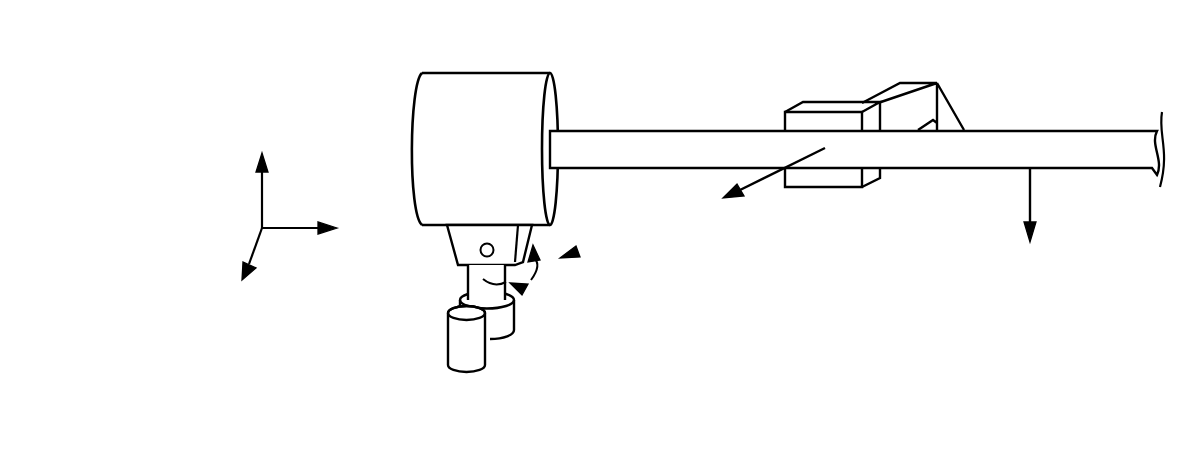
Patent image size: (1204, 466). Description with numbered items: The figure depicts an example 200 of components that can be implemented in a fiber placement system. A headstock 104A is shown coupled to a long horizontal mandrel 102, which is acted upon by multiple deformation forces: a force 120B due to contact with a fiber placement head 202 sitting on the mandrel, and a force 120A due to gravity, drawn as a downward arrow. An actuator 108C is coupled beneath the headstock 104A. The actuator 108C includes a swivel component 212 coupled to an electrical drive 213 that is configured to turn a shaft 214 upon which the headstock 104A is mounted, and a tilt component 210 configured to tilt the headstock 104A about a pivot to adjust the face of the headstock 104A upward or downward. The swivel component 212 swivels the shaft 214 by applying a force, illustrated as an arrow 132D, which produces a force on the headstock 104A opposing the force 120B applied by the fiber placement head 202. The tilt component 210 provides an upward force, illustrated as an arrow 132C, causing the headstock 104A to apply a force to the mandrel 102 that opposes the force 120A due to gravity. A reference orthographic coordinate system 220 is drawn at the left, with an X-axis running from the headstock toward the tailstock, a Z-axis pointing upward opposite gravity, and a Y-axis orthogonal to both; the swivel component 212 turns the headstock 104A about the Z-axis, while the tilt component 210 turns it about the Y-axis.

The example 200 is at (317, 72).
The reference orthographic coordinate system 220 is at (223, 203).
The headstock 104A is at (500, 73).
The mandrel 102 is at (692, 131).
The fiber placement head 202 is at (816, 103).
The force 120A is at (1030, 192).
The force 120B is at (757, 185).
The actuator 108C is at (568, 252).
The arrow 132C is at (540, 263).
The arrow 132D is at (522, 289).
The tilt component 210 is at (452, 241).
The shaft 214 is at (467, 284).
The electrical drive 213 is at (448, 332).
The swivel component 212 is at (515, 328).